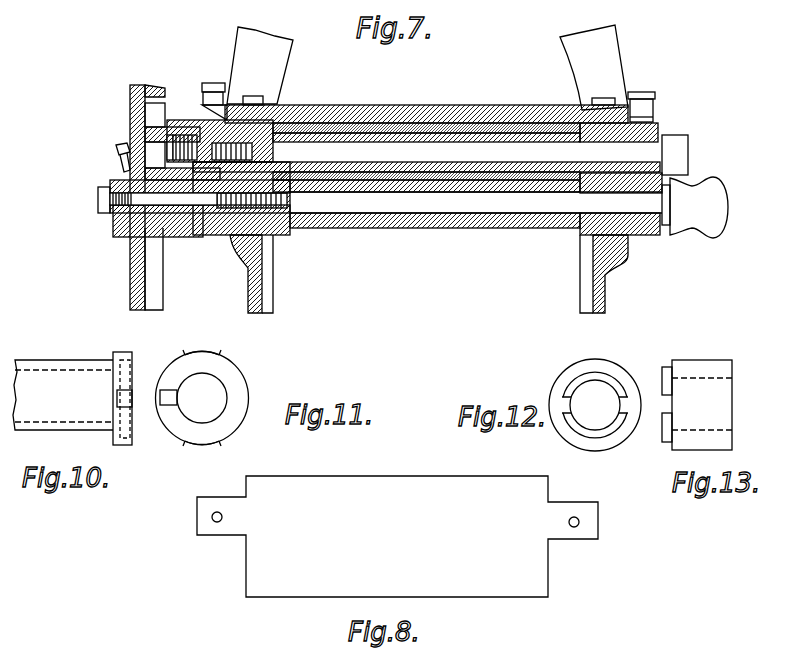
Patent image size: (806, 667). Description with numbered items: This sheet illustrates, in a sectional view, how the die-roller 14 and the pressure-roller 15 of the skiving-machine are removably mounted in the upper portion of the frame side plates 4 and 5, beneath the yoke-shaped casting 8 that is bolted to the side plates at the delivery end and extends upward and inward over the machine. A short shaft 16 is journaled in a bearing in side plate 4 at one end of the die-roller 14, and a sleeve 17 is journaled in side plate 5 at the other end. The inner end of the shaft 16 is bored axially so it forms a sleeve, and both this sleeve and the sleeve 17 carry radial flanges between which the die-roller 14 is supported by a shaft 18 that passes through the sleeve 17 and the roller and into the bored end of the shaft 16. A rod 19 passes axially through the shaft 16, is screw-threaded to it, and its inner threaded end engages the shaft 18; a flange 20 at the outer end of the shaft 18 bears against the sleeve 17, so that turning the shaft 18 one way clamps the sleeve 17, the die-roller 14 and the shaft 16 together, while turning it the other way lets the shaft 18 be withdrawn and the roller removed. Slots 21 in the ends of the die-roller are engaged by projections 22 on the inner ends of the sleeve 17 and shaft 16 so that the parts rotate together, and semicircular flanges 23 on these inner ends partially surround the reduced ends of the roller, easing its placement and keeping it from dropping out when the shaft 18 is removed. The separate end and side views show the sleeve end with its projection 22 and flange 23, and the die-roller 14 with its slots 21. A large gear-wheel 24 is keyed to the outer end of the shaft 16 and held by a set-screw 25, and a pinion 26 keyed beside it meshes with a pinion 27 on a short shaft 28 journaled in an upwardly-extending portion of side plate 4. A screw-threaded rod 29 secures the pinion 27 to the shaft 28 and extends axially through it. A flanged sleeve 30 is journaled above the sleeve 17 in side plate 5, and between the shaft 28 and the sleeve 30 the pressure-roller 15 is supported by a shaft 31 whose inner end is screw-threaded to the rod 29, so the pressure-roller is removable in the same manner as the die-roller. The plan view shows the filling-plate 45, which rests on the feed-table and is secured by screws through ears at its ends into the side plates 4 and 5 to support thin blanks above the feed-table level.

In FIG. 7, the side plate 4 is at (248, 298).
In FIG. 7, the side plate 5 is at (600, 298).
In FIG. 7, the yoke-shaped casting 8 is at (273, 80).
In FIG. 7, the die-roller 14 is at (465, 222).
In FIG. 12, the die-roller 14 is at (613, 370).
In FIG. 13, the die-roller 14 is at (707, 363).
In FIG. 7, the pressure-roller 15 is at (380, 133).
In FIG. 7, the short shaft 16 is at (213, 210).
In FIG. 10, the short shaft 16 is at (72, 367).
In FIG. 11, the short shaft 16 is at (238, 383).
In FIG. 7, the sleeve 17 is at (642, 220).
In FIG. 7, the shaft 18 is at (393, 205).
In FIG. 7, the rod 19 is at (145, 198).
In FIG. 7, the flange 20 is at (665, 188).
In FIG. 12, the slot 21 is at (560, 403).
In FIG. 13, the slot 21 is at (668, 405).
In FIG. 11, the projection 22 is at (163, 398).
In FIG. 11, the semicircular flange 23 is at (190, 358).
In FIG. 7, the gear-wheel 24 is at (145, 98).
In FIG. 7, the set-screw 25 is at (118, 155).
In FIG. 7, the pinion 26 is at (185, 220).
In FIG. 7, the pinion 27 is at (185, 120).
In FIG. 7, the short shaft 28 is at (202, 135).
In FIG. 7, the screw-threaded rod 29 is at (176, 133).
In FIG. 7, the sleeve 30 is at (660, 133).
In FIG. 7, the shaft 31 is at (460, 148).
In FIG. 8, the filling-plate 45 is at (549, 595).